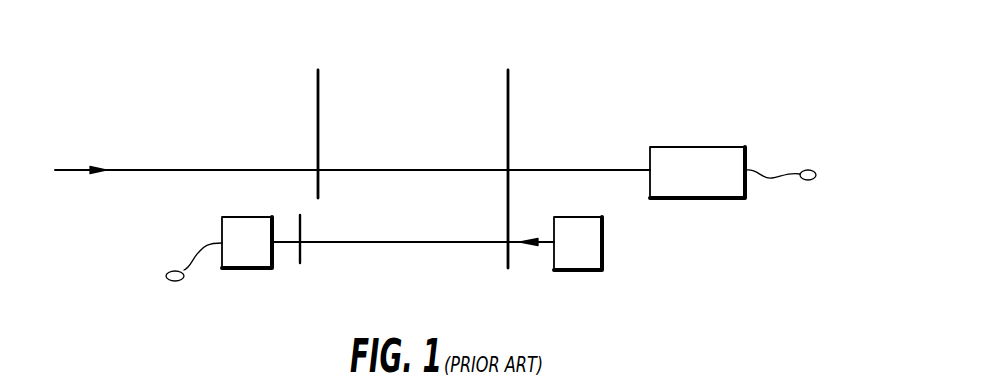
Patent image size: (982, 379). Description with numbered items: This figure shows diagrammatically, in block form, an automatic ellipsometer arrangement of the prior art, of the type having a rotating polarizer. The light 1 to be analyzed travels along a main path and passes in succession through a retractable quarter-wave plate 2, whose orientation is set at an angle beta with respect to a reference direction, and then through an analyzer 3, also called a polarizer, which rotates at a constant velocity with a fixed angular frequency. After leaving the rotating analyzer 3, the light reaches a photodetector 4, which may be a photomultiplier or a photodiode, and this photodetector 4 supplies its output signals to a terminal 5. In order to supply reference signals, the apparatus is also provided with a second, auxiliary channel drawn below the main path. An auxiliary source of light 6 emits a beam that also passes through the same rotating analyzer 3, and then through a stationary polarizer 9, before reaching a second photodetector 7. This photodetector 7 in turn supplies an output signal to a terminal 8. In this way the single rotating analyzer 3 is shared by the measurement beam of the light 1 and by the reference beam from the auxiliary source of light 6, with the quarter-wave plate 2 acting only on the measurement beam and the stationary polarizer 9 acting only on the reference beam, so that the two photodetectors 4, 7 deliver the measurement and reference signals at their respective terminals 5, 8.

The light 1 is at (72, 170).
The retractable quarter-wave plate 2 is at (318, 79).
The analyzer 3 is at (509, 76).
The photodetector 4 is at (678, 147).
The terminal 5 is at (811, 168).
The auxiliary source of light 6 is at (603, 232).
The photodetector 7 is at (232, 268).
The terminal 8 is at (166, 271).
The stationary polarizer 9 is at (318, 231).